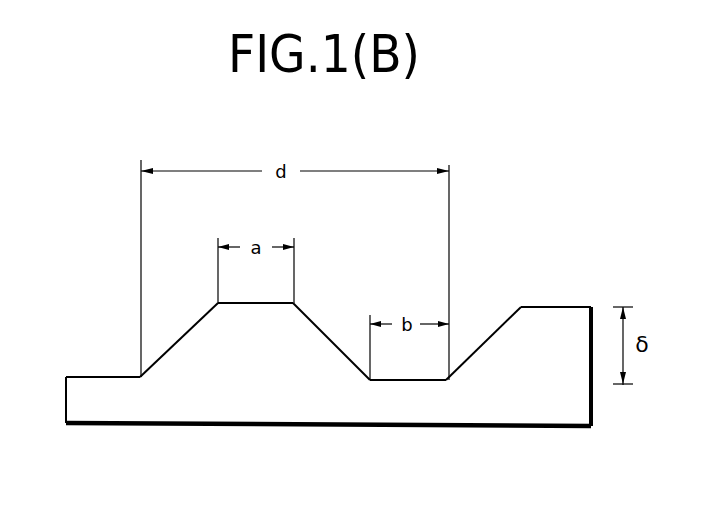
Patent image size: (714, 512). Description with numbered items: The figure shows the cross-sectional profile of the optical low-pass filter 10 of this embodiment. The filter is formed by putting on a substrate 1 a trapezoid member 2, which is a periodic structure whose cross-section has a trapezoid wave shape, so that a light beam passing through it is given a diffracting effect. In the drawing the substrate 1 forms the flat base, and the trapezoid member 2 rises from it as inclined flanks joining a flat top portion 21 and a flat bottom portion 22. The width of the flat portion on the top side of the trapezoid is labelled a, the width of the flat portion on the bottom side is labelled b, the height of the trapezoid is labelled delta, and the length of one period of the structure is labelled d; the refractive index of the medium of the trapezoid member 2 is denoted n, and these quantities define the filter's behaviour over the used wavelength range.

The optical low-pass filter 10 is at (328, 326).
The substrate 1 is at (138, 403).
The trapezoid member 2 is at (188, 343).
The top land 21 is at (238, 302).
The bottom land 22 is at (403, 380).